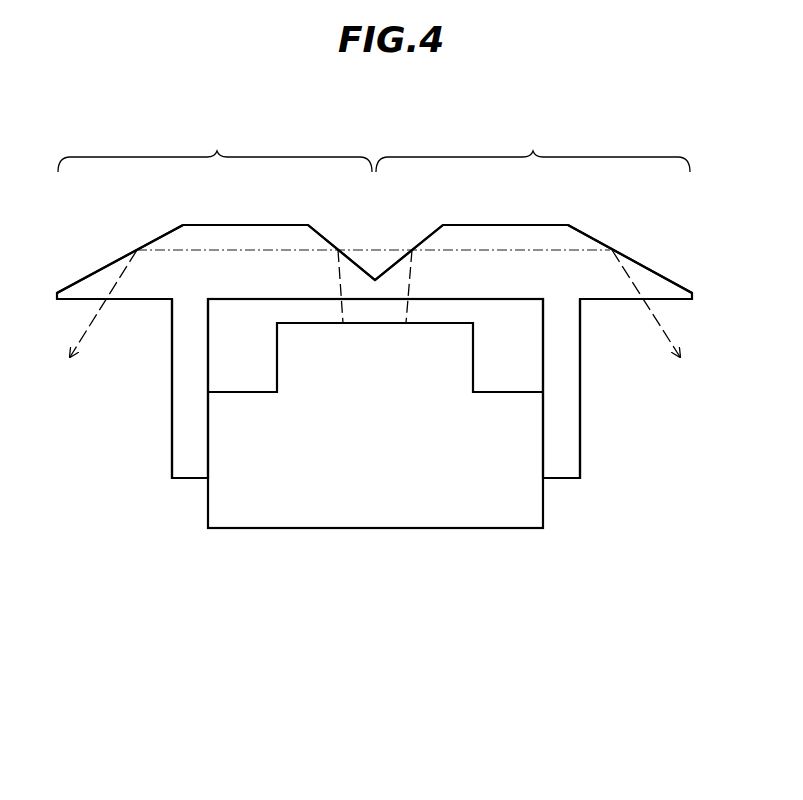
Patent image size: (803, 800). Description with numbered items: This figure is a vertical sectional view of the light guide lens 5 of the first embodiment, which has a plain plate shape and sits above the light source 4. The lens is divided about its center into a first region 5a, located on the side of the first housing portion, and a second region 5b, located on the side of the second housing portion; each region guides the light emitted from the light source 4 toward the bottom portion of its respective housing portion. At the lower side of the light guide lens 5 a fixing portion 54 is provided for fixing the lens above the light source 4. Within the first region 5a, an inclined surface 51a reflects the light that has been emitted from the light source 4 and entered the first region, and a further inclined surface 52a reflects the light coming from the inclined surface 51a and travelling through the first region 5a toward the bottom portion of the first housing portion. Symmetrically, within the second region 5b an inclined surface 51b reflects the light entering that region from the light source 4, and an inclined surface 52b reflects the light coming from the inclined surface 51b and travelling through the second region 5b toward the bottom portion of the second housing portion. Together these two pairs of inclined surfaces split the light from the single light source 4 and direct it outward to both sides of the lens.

The light guide lens 5 is at (649, 127).
The first region 5a is at (215, 149).
The second region 5b is at (533, 149).
The inclined surface 51a is at (322, 236).
The inclined surface 51b is at (428, 237).
The inclined surface 52a is at (108, 267).
The inclined surface 52b is at (643, 268).
The fixing portion 54 is at (568, 438).
The light source 4 is at (383, 517).